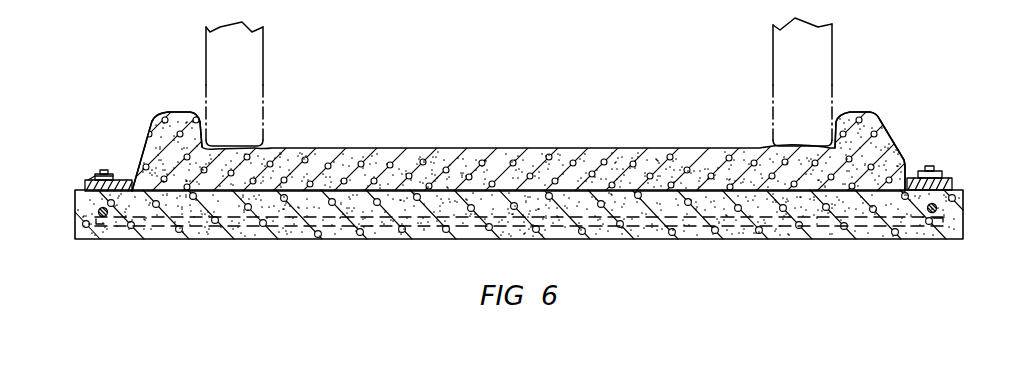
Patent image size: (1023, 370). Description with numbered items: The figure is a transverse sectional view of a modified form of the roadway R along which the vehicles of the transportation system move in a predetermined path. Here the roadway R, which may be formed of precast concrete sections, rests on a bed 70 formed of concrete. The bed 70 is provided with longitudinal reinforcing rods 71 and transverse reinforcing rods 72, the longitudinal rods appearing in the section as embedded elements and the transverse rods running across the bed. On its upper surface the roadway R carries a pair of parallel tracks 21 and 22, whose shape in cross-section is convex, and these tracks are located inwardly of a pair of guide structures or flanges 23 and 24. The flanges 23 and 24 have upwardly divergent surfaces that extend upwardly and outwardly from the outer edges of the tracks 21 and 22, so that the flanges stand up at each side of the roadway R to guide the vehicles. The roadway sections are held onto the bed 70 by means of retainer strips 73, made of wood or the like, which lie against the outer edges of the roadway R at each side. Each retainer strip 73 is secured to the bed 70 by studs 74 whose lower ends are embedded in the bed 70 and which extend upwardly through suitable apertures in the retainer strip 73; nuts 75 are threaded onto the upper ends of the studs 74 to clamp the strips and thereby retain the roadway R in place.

The roadway R is at (552, 115).
The track 21 is at (266, 149).
The track 22 is at (777, 150).
The guide structure or flange 23 is at (167, 108).
The guide structure or flange 24 is at (869, 105).
The bed 70 is at (303, 241).
The longitudinal reinforcing rods 71 is at (934, 207).
The transverse reinforcing rods 72 is at (684, 229).
The retainer strip 73 is at (85, 182).
The stud 74 is at (108, 174).
The nut 75 is at (98, 180).